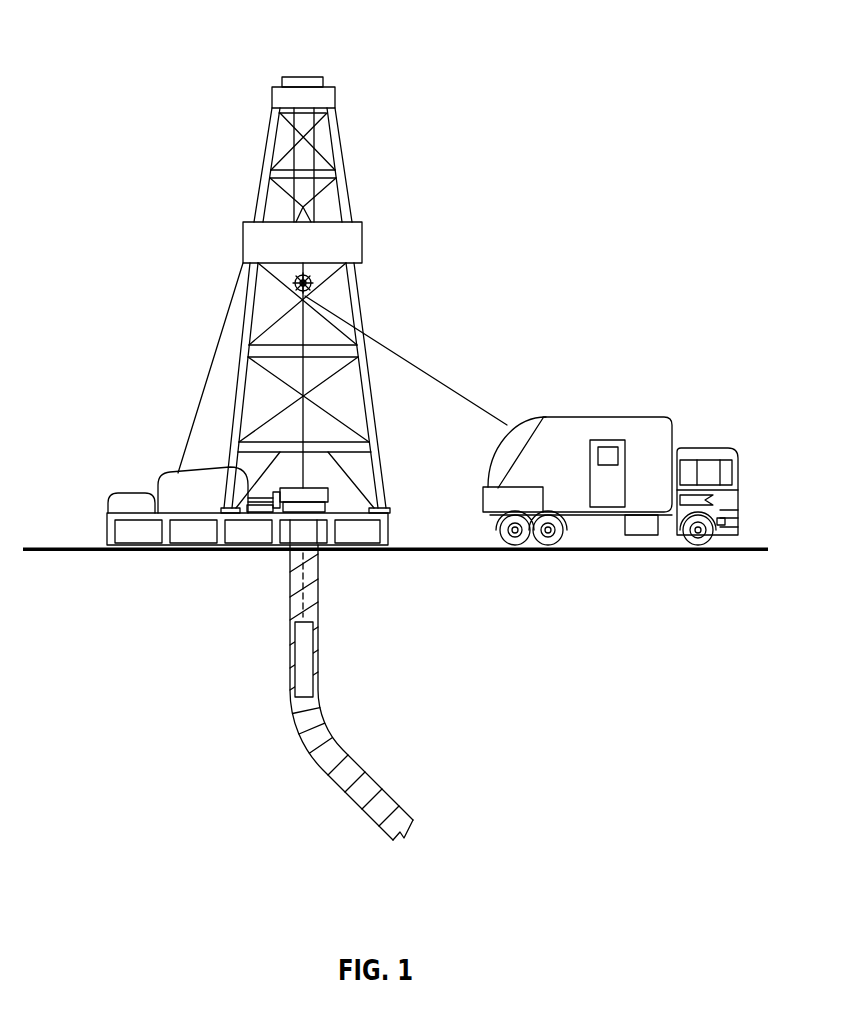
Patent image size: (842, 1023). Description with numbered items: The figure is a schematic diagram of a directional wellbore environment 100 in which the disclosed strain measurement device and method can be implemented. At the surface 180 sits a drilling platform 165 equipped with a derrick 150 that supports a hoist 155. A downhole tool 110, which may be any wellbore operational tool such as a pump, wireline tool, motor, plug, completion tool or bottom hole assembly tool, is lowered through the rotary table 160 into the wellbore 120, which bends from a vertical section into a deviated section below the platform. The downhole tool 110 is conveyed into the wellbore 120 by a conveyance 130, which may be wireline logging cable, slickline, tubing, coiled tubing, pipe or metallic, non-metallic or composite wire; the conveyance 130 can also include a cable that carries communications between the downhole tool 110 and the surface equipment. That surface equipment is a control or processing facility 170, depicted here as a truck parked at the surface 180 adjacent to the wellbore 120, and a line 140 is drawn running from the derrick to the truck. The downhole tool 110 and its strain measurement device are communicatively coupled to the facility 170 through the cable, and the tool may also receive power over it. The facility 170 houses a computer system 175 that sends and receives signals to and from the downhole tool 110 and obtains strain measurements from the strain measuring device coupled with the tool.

The directional wellbore environment 100 is at (166, 51).
The downhole tool 110 is at (311, 665).
The wellbore 120 is at (366, 754).
The conveyance 130 is at (289, 595).
The communication line 140 is at (447, 383).
The derrick 150 is at (360, 288).
The hoist 155 is at (296, 278).
The rotary table 160 is at (328, 497).
The drilling platform 165 is at (390, 532).
The control or processing facility 170 is at (596, 405).
The computer system 175 is at (590, 478).
The surface 180 is at (40, 547).